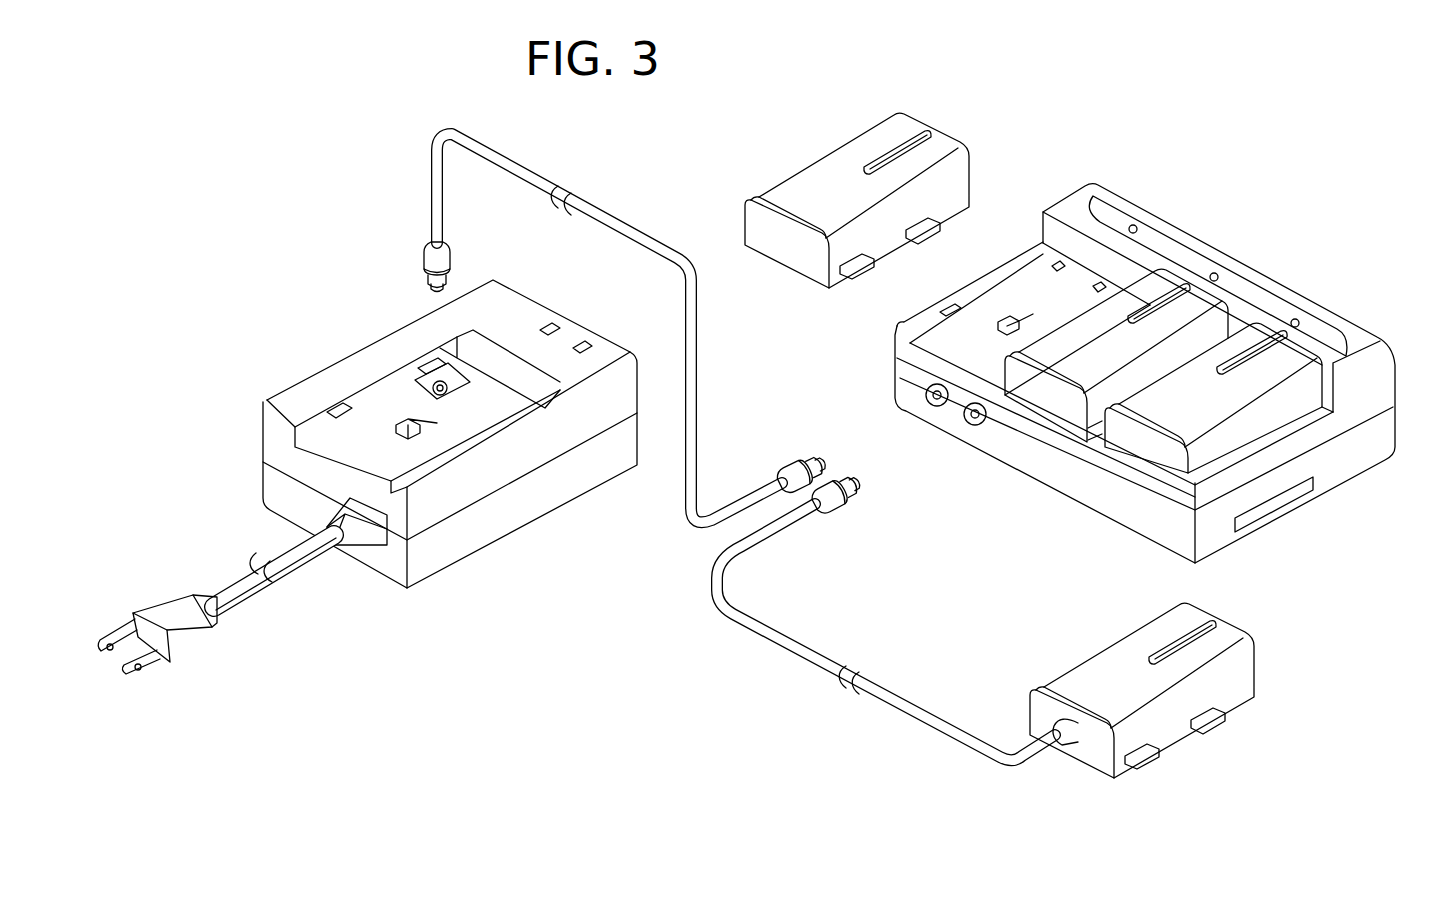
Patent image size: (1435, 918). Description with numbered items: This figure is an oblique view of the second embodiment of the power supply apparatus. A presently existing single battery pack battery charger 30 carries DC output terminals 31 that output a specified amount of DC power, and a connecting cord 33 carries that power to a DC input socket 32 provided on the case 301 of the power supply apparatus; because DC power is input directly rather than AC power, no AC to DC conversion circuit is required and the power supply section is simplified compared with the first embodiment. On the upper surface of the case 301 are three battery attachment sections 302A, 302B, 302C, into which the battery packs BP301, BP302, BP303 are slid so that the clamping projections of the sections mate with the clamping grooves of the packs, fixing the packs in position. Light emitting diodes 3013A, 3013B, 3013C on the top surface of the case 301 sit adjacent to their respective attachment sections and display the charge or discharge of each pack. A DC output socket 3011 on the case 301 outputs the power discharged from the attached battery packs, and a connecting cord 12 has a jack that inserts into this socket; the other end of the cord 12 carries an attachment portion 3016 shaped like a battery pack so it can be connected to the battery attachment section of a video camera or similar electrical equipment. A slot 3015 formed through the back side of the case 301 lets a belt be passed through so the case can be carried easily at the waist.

The battery charger 30 is at (302, 381).
The DC output terminals 31 is at (413, 388).
The connecting cord 33 is at (612, 214).
The battery pack BP301 is at (817, 167).
The case 301 is at (1046, 205).
The light emitting diode 3013A is at (1135, 224).
The light emitting diode 3013B is at (1216, 272).
The light emitting diode 3013C is at (1297, 318).
The battery attachment section 302A is at (930, 345).
The DC input socket 32 is at (925, 397).
The DC output socket 3011 is at (962, 426).
The battery pack BP302 is at (1023, 390).
The battery attachment section 302B is at (1047, 420).
The battery pack BP303 is at (1120, 447).
The battery attachment section 302C is at (1150, 478).
The slot 3015 is at (1273, 503).
The attachment portion 3016 is at (1172, 735).
The connecting cord 12 is at (773, 643).